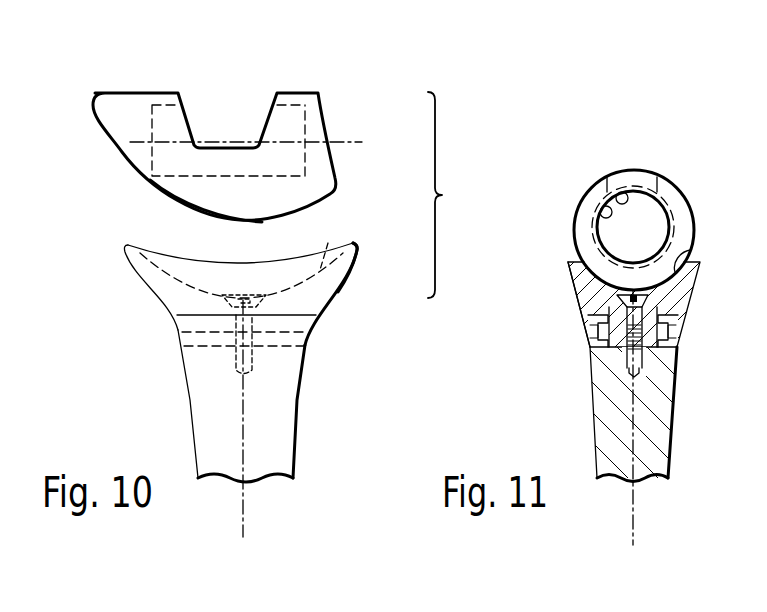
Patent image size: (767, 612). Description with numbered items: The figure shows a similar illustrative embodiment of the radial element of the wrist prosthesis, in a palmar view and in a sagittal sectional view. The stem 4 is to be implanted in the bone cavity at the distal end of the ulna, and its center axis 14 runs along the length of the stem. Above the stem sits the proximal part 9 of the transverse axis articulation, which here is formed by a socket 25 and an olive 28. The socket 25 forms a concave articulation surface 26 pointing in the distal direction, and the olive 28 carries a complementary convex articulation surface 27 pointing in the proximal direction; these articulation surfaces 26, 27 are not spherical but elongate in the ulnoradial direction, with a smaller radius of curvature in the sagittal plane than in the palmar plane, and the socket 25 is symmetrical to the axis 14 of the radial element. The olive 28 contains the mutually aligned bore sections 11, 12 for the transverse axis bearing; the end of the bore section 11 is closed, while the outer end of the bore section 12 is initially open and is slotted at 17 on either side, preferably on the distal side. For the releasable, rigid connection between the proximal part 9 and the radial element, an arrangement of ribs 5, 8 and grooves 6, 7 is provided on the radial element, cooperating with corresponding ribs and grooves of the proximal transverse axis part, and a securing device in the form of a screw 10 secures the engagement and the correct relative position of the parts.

In FIG. 10, the stem 4 is at (280, 398).
In FIG. 11, the stem 4 is at (592, 424).
In FIG. 11, the rib 5 is at (600, 317).
In FIG. 11, the groove 6 is at (598, 337).
In FIG. 11, the groove 7 is at (675, 343).
In FIG. 11, the rib 8 is at (660, 322).
In FIG. 10, the proximal part of the transverse axis articulation 9 is at (444, 195).
In FIG. 11, the screw 10 is at (643, 356).
In FIG. 11, the bore section 11 is at (627, 190).
In FIG. 11, the bore section 12 is at (600, 206).
In FIG. 10, the center axis of the stem 14 is at (243, 440).
In FIG. 11, the slot 17 is at (643, 176).
In FIG. 10, the socket 25 is at (312, 297).
In FIG. 11, the socket 25 is at (688, 298).
In FIG. 10, the concave articulation surface 26 is at (328, 243).
In FIG. 11, the concave articulation surface 26 is at (680, 255).
In FIG. 10, the convex articulation surface 27 is at (185, 212).
In FIG. 11, the convex articulation surface 27 is at (568, 288).
In FIG. 10, the olive 28 is at (114, 108).
In FIG. 11, the olive 28 is at (676, 205).